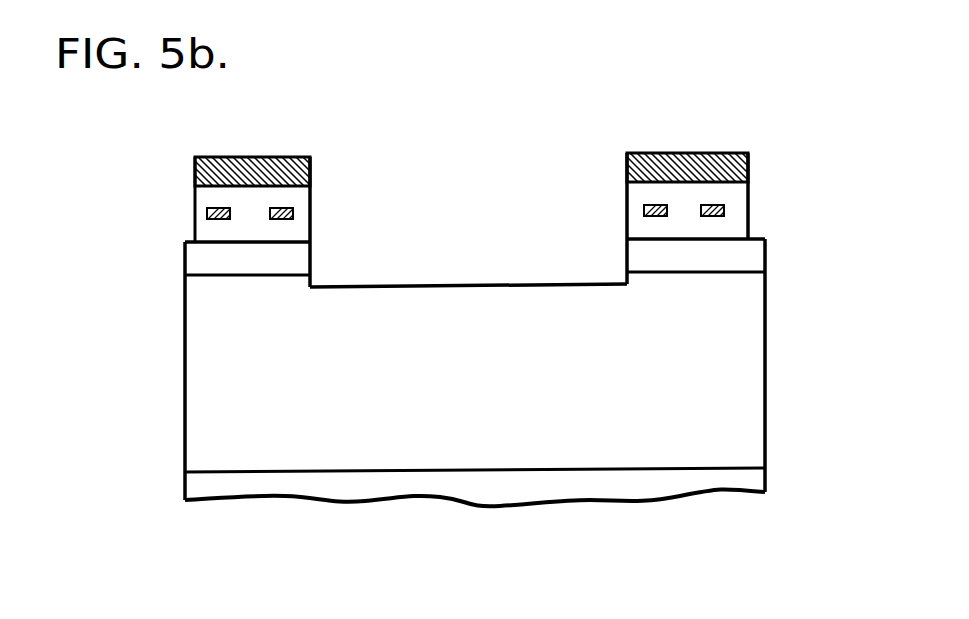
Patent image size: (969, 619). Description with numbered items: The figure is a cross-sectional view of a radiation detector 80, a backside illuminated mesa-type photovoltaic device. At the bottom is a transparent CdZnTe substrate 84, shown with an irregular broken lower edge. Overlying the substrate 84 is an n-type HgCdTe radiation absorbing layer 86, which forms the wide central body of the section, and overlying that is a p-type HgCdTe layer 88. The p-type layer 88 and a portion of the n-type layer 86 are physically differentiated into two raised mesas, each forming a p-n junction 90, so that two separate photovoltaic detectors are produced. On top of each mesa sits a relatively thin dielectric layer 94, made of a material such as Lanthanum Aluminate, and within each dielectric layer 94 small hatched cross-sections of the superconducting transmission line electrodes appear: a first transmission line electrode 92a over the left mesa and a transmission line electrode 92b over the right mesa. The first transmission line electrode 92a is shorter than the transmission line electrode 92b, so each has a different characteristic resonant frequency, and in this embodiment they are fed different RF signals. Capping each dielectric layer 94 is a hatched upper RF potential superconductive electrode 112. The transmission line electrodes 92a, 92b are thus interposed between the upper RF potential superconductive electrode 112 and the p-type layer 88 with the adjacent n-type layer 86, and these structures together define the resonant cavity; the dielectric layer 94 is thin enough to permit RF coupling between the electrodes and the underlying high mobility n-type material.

The radiation detector 80 is at (543, 72).
The transparent CdZnTe substrate 84 is at (767, 427).
The n-type HgCdTe radiation absorbing layer 86 is at (183, 371).
The p-type HgCdTe layer 88 is at (185, 243).
The p-n junctions 90 is at (185, 276).
The first transmission line electrode 92a is at (207, 209).
The transmission line electrode 92b is at (644, 212).
The dielectric layer 94 is at (749, 215).
The upper RF potential superconductive electrode 112 is at (310, 157).